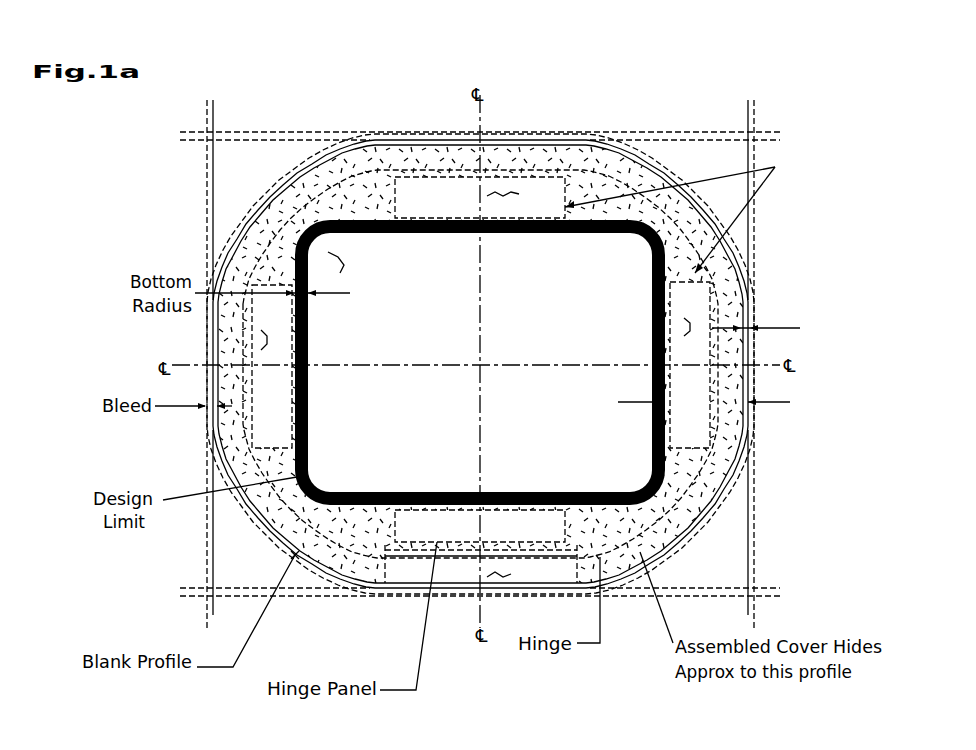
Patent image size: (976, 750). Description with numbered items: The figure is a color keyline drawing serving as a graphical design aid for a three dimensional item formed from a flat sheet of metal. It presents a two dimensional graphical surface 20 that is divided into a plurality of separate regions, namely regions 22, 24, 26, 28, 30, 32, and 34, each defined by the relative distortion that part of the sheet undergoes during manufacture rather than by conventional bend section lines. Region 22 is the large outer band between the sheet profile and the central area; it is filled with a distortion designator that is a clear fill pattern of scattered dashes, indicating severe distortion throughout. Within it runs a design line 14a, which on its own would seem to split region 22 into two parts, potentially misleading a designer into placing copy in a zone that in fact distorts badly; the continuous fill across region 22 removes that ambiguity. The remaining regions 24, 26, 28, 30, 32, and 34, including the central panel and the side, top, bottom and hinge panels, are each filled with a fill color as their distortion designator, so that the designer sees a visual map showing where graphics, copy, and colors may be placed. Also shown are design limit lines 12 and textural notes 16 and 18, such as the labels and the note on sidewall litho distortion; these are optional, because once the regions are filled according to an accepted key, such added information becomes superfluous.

The design limit lines 12 is at (392, 200).
The design line 14a is at (713, 437).
The textural note 16 is at (810, 154).
The textural note 18 is at (583, 721).
The two dimensional graphical surface 20 is at (796, 421).
The region 22 is at (668, 490).
The region 24 is at (690, 326).
The region 26 is at (667, 292).
The region 28 is at (500, 575).
The region 30 is at (498, 193).
The region 32 is at (267, 340).
The region 34 is at (348, 258).